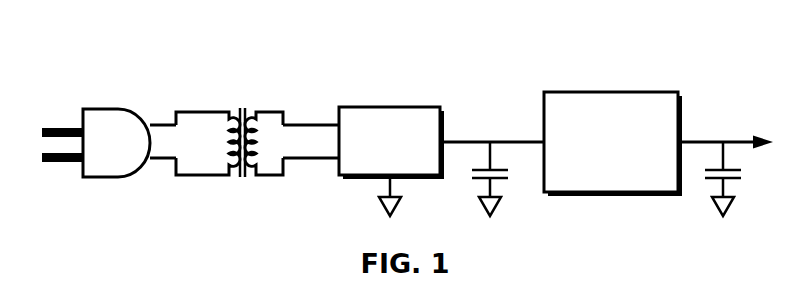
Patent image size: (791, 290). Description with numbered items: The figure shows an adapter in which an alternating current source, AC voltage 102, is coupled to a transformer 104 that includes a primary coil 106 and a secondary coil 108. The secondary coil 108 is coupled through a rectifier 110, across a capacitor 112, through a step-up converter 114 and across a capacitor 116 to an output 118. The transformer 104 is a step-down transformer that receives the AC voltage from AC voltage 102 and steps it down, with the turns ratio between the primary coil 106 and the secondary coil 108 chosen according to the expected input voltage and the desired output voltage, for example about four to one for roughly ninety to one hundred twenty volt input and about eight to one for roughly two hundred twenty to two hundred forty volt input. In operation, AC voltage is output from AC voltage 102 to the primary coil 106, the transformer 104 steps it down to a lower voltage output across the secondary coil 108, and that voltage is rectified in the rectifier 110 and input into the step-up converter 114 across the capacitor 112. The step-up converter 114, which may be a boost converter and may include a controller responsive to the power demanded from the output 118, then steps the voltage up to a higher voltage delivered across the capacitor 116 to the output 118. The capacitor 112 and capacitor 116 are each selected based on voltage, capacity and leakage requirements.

The AC voltage 102 is at (97, 185).
The transformer 104 is at (251, 139).
The primary coil 106 is at (221, 101).
The secondary coil 108 is at (305, 95).
The rectifier 110 is at (391, 161).
The capacitor 112 is at (507, 193).
The step-up converter 114 is at (613, 144).
The capacitor 116 is at (703, 188).
The output 118 is at (757, 122).